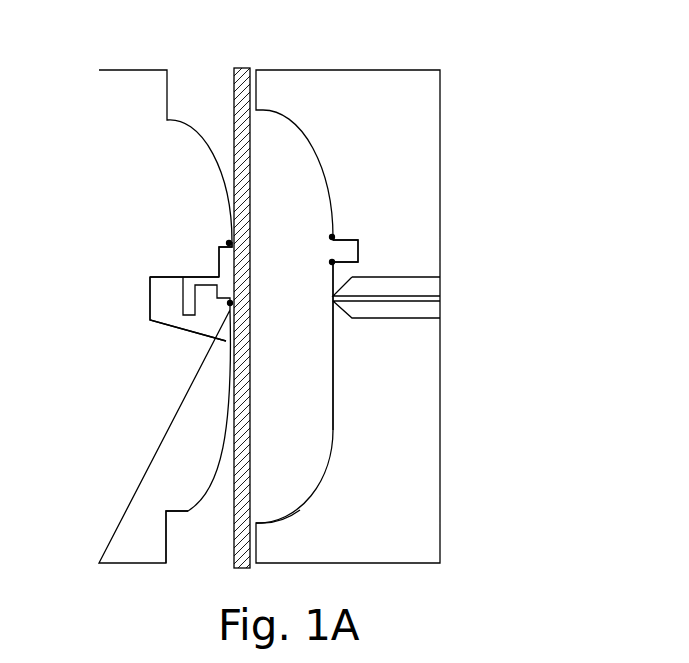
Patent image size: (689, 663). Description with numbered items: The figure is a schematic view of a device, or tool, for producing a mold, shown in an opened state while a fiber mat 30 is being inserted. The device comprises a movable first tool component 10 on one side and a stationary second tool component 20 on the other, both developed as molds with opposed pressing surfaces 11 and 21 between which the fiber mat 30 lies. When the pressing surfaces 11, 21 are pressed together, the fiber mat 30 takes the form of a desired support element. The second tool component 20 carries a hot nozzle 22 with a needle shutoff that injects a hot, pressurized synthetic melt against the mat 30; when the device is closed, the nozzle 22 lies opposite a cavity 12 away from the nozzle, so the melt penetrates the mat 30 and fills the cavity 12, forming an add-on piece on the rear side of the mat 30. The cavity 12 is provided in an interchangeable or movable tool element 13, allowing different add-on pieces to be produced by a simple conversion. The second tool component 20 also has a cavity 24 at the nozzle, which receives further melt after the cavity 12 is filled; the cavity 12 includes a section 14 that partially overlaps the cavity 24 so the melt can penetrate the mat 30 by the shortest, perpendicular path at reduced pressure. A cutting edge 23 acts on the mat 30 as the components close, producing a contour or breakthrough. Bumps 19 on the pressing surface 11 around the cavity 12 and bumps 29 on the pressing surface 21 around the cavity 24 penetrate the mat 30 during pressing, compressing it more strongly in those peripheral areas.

The first tool component 10 is at (133, 88).
The pressing surface 11 is at (191, 508).
The cavity away from the nozzle 12 is at (183, 278).
The tool element 13 is at (163, 318).
The section 14 is at (220, 258).
The bumps 19 is at (229, 243).
The second tool component 20 is at (388, 88).
The pressing surface 21 is at (333, 352).
The hot nozzle 22 is at (428, 287).
The cutting edge 23 is at (262, 525).
The cavity at the nozzle 24 is at (358, 243).
The bumps 29 is at (332, 237).
The fiber mat 30 is at (240, 70).